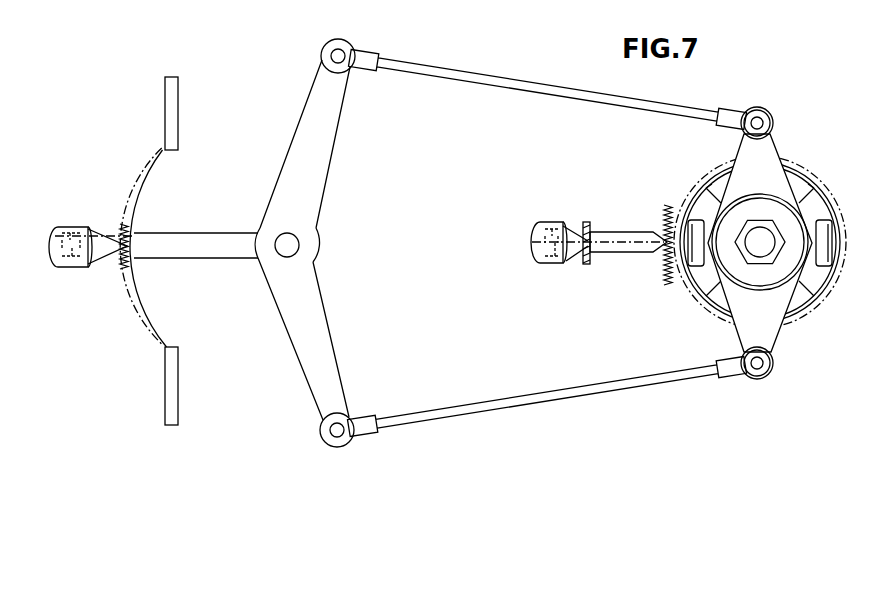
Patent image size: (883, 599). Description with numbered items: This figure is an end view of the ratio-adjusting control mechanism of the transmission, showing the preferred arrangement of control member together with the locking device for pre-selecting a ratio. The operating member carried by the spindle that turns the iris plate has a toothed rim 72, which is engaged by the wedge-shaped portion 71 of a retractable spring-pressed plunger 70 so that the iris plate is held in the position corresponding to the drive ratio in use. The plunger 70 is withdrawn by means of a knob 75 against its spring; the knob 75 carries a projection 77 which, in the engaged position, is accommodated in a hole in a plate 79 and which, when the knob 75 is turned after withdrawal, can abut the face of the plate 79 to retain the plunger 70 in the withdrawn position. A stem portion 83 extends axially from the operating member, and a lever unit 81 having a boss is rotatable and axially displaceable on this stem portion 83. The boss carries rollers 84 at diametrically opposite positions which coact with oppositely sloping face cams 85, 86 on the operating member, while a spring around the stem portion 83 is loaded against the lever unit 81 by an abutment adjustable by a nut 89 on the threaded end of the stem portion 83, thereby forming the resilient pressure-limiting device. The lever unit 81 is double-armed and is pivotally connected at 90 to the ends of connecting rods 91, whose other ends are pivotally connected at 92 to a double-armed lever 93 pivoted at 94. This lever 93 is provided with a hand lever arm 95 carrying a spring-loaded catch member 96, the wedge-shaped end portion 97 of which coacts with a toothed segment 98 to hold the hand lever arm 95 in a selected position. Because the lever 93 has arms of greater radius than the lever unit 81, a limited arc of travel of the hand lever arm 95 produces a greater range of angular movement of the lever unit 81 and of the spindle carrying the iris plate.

The spring-pressed plunger 70 is at (609, 232).
The wedge-shaped portion 71 is at (661, 226).
The toothed rim 72 is at (683, 192).
The knob 75 is at (551, 222).
The projection 77 is at (580, 254).
The plate 79 is at (588, 264).
The lever unit 81 is at (768, 162).
The stem portion 83 is at (758, 258).
The rollers 84 is at (688, 266).
The face cam 85 is at (810, 197).
The face cam 86 is at (706, 193).
The nut 89 is at (758, 221).
The pivotal connection 90 is at (758, 118).
The connecting rods 91 is at (496, 78).
The pivotal connection 92 is at (343, 63).
The double-armed lever 93 is at (312, 289).
The pivot 94 is at (298, 243).
The hand lever arm 95 is at (200, 240).
The spring-loaded catch member 96 is at (95, 228).
The wedge-shaped end portion 97 is at (120, 264).
The toothed segment 98 is at (146, 326).